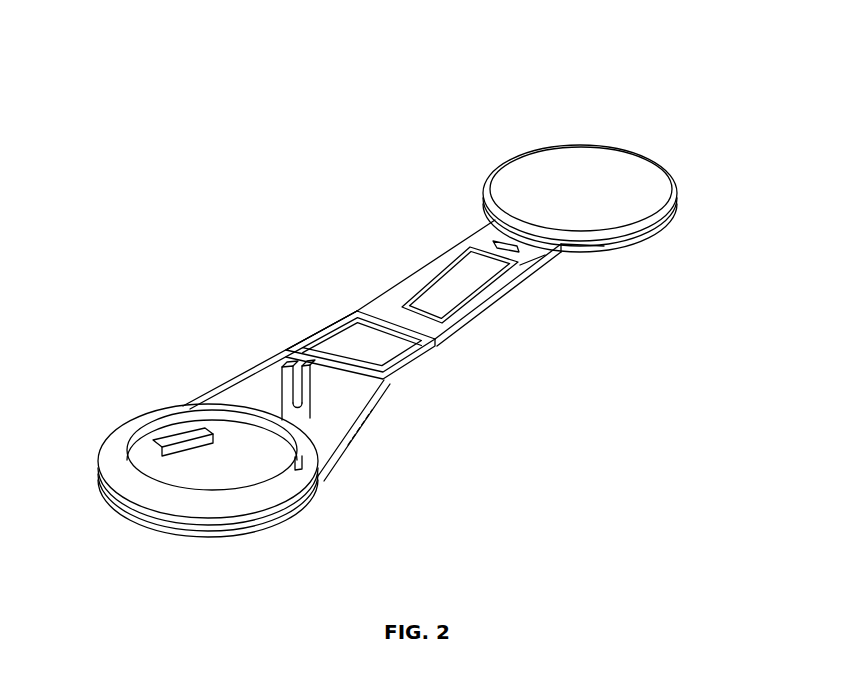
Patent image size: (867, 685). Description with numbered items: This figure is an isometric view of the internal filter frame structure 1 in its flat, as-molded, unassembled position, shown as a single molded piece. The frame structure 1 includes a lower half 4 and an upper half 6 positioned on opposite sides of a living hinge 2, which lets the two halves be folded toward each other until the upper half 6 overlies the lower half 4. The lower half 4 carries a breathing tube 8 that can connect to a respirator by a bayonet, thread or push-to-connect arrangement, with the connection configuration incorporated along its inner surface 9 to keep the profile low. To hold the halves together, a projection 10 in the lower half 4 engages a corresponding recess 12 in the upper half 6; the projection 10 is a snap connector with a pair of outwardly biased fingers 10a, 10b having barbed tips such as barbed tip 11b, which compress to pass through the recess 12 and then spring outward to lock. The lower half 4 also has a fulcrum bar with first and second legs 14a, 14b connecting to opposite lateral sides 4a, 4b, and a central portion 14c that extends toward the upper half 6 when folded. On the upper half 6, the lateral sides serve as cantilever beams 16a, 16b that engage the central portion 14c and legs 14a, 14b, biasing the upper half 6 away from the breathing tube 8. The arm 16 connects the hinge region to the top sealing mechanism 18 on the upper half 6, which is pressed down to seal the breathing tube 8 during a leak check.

The frame structure 1 is at (200, 97).
The living hinge 2 is at (387, 320).
The lower half 4 is at (147, 292).
The lateral side of the lower half 4a is at (205, 388).
The lateral side of the lower half 4b is at (363, 427).
The upper half 6 is at (403, 145).
The breathing tube 8 is at (313, 458).
The inner surface 9 is at (180, 447).
The projection 10 is at (268, 388).
The finger 10a is at (289, 370).
The finger 10b is at (304, 378).
The barbed tip 11b is at (306, 397).
The recess 12 is at (502, 240).
The first leg 14a is at (300, 343).
The second leg 14b is at (386, 377).
The central portion 14c is at (337, 355).
The arm 16 is at (484, 307).
The cantilever beam 16a is at (437, 258).
The cantilever beam 16b is at (508, 278).
The top sealing mechanism 18 is at (661, 197).